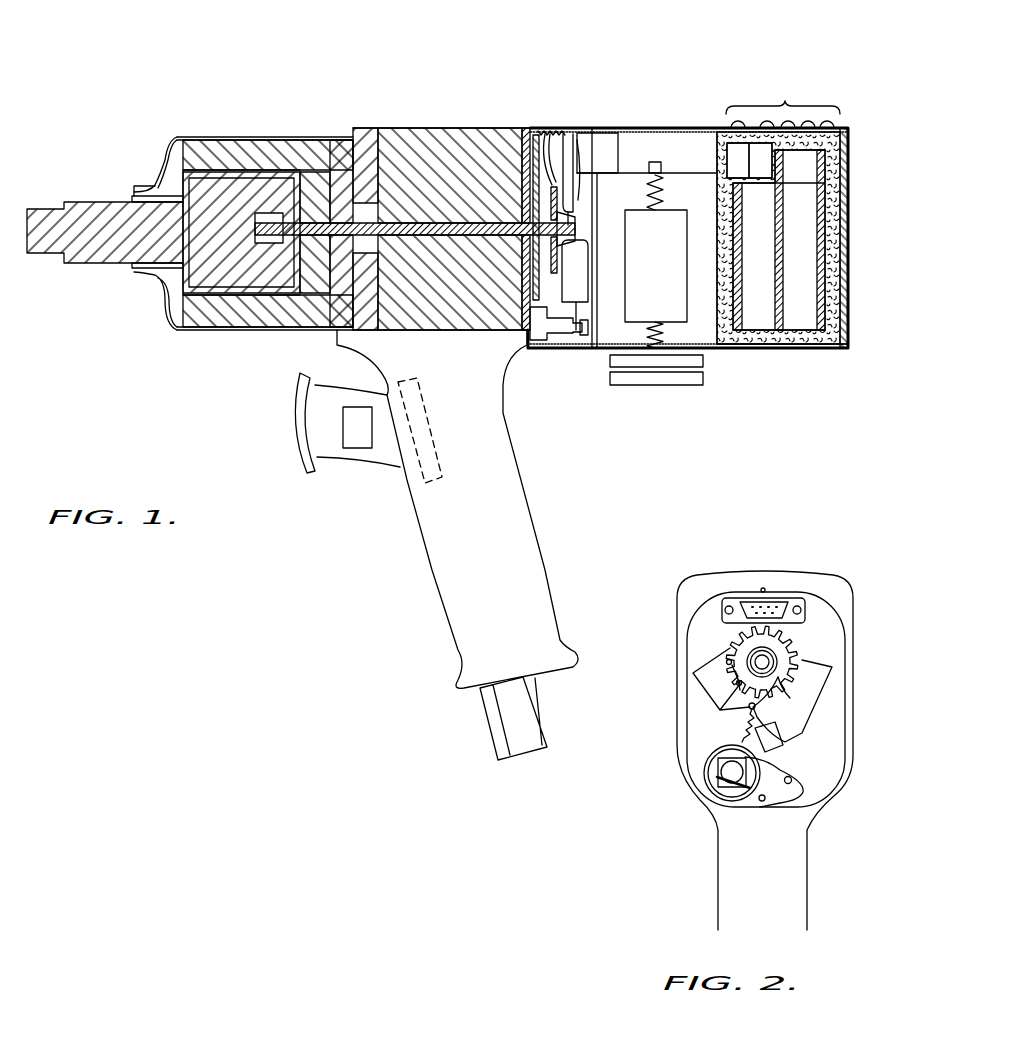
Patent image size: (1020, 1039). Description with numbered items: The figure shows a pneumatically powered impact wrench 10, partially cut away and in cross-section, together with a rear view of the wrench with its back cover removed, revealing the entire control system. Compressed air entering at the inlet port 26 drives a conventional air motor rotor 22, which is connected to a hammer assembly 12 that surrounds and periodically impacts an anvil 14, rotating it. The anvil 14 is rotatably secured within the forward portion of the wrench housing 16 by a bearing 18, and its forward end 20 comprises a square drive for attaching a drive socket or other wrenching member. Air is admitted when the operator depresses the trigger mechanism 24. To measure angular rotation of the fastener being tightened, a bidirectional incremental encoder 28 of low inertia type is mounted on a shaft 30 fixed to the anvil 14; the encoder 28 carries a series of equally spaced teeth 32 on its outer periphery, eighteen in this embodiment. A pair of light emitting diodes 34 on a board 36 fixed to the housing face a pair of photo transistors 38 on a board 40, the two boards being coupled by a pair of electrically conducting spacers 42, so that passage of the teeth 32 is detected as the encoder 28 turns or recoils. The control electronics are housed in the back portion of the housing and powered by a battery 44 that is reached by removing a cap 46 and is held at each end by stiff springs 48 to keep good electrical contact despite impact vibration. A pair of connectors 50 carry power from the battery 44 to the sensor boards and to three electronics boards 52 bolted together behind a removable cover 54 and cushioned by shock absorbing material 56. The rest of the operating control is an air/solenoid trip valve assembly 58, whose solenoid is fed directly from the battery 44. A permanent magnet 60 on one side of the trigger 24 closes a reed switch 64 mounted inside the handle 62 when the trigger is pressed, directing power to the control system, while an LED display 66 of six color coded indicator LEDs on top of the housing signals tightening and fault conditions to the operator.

In FIG. 1, the wrench 10 is at (655, 92).
In FIG. 1, the hammer assembly 12 is at (250, 150).
In FIG. 1, the anvil 14 is at (190, 188).
In FIG. 1, the wrench housing 16 is at (172, 142).
In FIG. 1, the bearing 18 is at (155, 188).
In FIG. 1, the forward end 20 is at (27, 215).
In FIG. 1, the air motor rotor 22 is at (415, 140).
In FIG. 1, the trigger mechanism 24 is at (300, 397).
In FIG. 1, the inlet port 26 is at (507, 715).
In FIG. 1, the bidirectional incremental encoder 28 is at (562, 150).
In FIG. 2, the bidirectional incremental encoder 28 is at (783, 680).
In FIG. 1, the shaft 30 is at (420, 230).
In FIG. 2, the shaft 30 is at (777, 662).
In FIG. 2, the teeth 32 is at (800, 650).
In FIG. 1, the light emitting diodes 34 is at (545, 140).
In FIG. 1, the board 36 is at (532, 131).
In FIG. 1, the photo transistors 38 is at (580, 160).
In FIG. 2, the photo transistors 38 is at (742, 740).
In FIG. 1, the board 40 is at (585, 135).
In FIG. 2, the board 40 is at (700, 672).
In FIG. 1, the electrically conducting spacers 42 is at (555, 140).
In FIG. 1, the battery 44 is at (672, 320).
In FIG. 1, the cap 46 is at (615, 367).
In FIG. 1, the springs 48 is at (666, 193).
In FIG. 1, the connectors 50 is at (613, 150).
In FIG. 2, the connectors 50 is at (777, 605).
In FIG. 1, the boards 52 is at (820, 215).
In FIG. 1, the cover 54 is at (848, 172).
In FIG. 1, the shock absorbing material 56 is at (790, 355).
In FIG. 1, the air/solenoid trip valve assembly 58 is at (572, 345).
In FIG. 2, the air/solenoid trip valve assembly 58 is at (800, 747).
In FIG. 1, the permanent magnet 60 is at (350, 425).
In FIG. 1, the handle 62 is at (452, 582).
In FIG. 1, the reed switch 64 is at (423, 460).
In FIG. 1, the LED display 66 is at (810, 100).